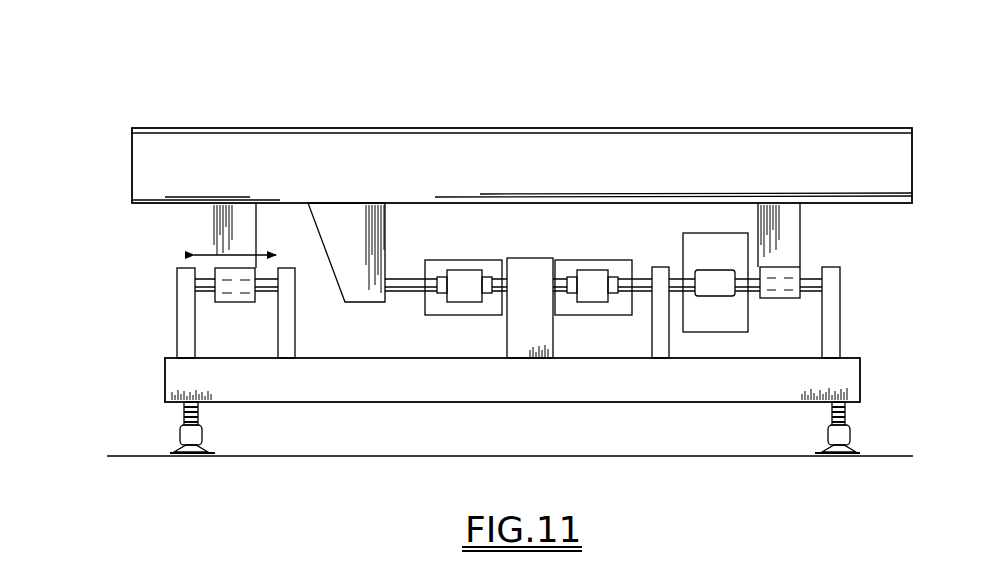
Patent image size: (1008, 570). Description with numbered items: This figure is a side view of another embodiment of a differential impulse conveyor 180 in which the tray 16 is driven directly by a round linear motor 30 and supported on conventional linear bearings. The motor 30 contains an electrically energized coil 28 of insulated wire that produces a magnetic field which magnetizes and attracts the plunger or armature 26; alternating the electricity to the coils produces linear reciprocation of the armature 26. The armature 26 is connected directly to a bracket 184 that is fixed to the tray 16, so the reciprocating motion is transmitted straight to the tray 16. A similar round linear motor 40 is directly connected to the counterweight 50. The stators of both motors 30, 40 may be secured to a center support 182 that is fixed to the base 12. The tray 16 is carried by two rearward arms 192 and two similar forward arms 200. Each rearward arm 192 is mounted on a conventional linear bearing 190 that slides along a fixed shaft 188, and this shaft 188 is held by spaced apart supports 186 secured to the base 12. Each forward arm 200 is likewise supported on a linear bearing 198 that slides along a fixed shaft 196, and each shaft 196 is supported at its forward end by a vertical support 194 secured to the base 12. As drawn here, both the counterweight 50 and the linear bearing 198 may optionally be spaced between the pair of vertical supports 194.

The differential impulse conveyor 180 is at (128, 120).
The tray 16 is at (346, 180).
The base 12 is at (308, 400).
The round linear motor 30 is at (445, 243).
The round linear motor 40 is at (590, 258).
The coil 28 is at (463, 272).
The armature 26 is at (408, 297).
The counterweight 50 is at (731, 262).
The center support 182 is at (537, 327).
The bracket 184 is at (342, 241).
The spaced apart supports 186 is at (187, 346).
The fixed shaft 188 is at (267, 297).
The linear bearing 190 is at (233, 303).
The rearward arms 192 is at (217, 218).
The vertical support 194 is at (662, 338).
The fixed shaft 196 is at (811, 275).
The linear bearing 198 is at (782, 262).
The forward arms 200 is at (758, 216).